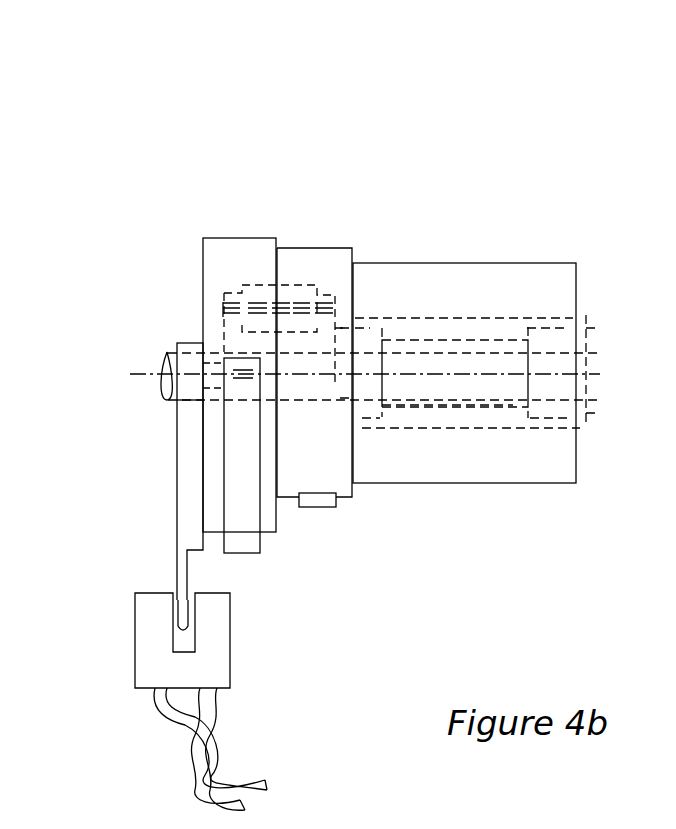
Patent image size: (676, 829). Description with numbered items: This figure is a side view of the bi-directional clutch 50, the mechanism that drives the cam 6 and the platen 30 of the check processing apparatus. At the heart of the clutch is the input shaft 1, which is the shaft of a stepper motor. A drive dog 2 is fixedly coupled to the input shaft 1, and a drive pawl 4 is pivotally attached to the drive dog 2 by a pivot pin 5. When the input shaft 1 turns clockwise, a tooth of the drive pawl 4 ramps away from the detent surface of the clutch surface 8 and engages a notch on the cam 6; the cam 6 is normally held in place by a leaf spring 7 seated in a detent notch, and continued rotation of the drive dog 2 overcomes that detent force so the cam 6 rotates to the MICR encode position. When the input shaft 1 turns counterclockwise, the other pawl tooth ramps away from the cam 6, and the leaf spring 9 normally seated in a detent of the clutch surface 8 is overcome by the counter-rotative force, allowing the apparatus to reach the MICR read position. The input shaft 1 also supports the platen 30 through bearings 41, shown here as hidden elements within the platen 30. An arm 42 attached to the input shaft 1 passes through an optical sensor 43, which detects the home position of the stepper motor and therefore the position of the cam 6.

The input shaft 1 is at (167, 350).
The drive dog 2 is at (230, 292).
The drive pawl 4 is at (267, 280).
The pivot pin 5 is at (302, 297).
The cam 6 is at (203, 457).
The leaf spring 7 is at (223, 490).
The clutch surface 8 is at (342, 242).
The leaf spring 9 is at (315, 510).
The platen 30 is at (517, 255).
The bearings 41 is at (375, 322).
The arm 42 is at (188, 597).
The optical sensor 43 is at (232, 656).
The bi-directional clutch 50 is at (385, 143).